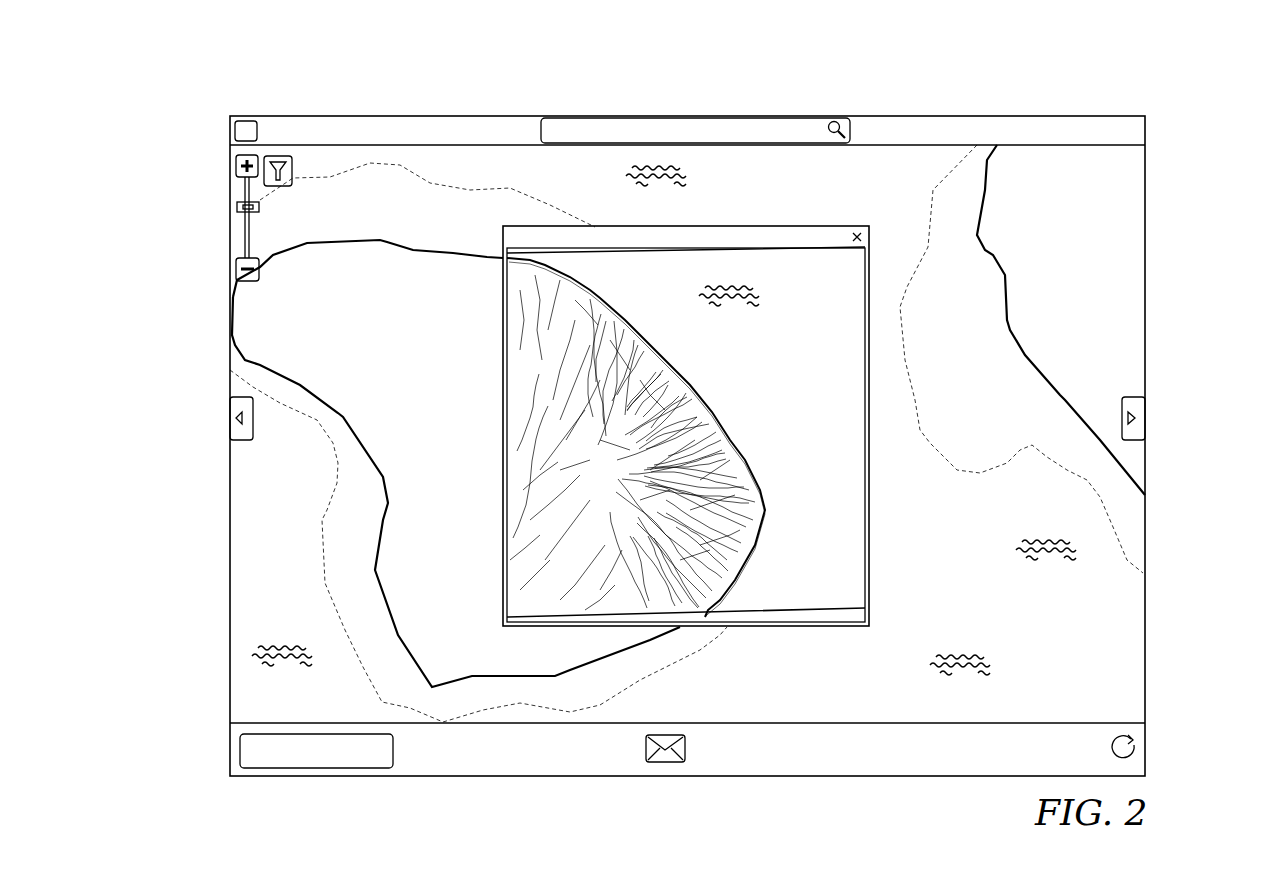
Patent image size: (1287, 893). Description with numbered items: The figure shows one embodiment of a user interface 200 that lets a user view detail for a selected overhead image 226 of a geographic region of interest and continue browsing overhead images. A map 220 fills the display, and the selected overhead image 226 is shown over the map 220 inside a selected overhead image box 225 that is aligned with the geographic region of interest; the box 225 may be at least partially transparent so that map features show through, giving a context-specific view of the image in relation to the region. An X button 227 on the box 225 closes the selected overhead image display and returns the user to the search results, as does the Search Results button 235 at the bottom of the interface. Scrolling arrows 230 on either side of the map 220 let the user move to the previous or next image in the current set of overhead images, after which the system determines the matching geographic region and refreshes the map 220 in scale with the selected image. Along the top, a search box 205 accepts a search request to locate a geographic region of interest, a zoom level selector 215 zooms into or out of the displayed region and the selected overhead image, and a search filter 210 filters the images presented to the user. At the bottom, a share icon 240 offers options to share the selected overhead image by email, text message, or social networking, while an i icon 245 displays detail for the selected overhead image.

The user interface 200 is at (1172, 128).
The search box 205 is at (632, 127).
The search filter 210 is at (283, 147).
The zoom level selector 215 is at (231, 205).
The map 220 is at (227, 333).
The selected overhead image box 225 is at (641, 356).
The selected overhead image 226 is at (553, 358).
The X button 227 is at (856, 223).
The scrolling arrows 230 is at (227, 420).
The Search Results button 235 is at (227, 750).
The share icon 240 is at (661, 779).
The i icon 245 is at (716, 779).